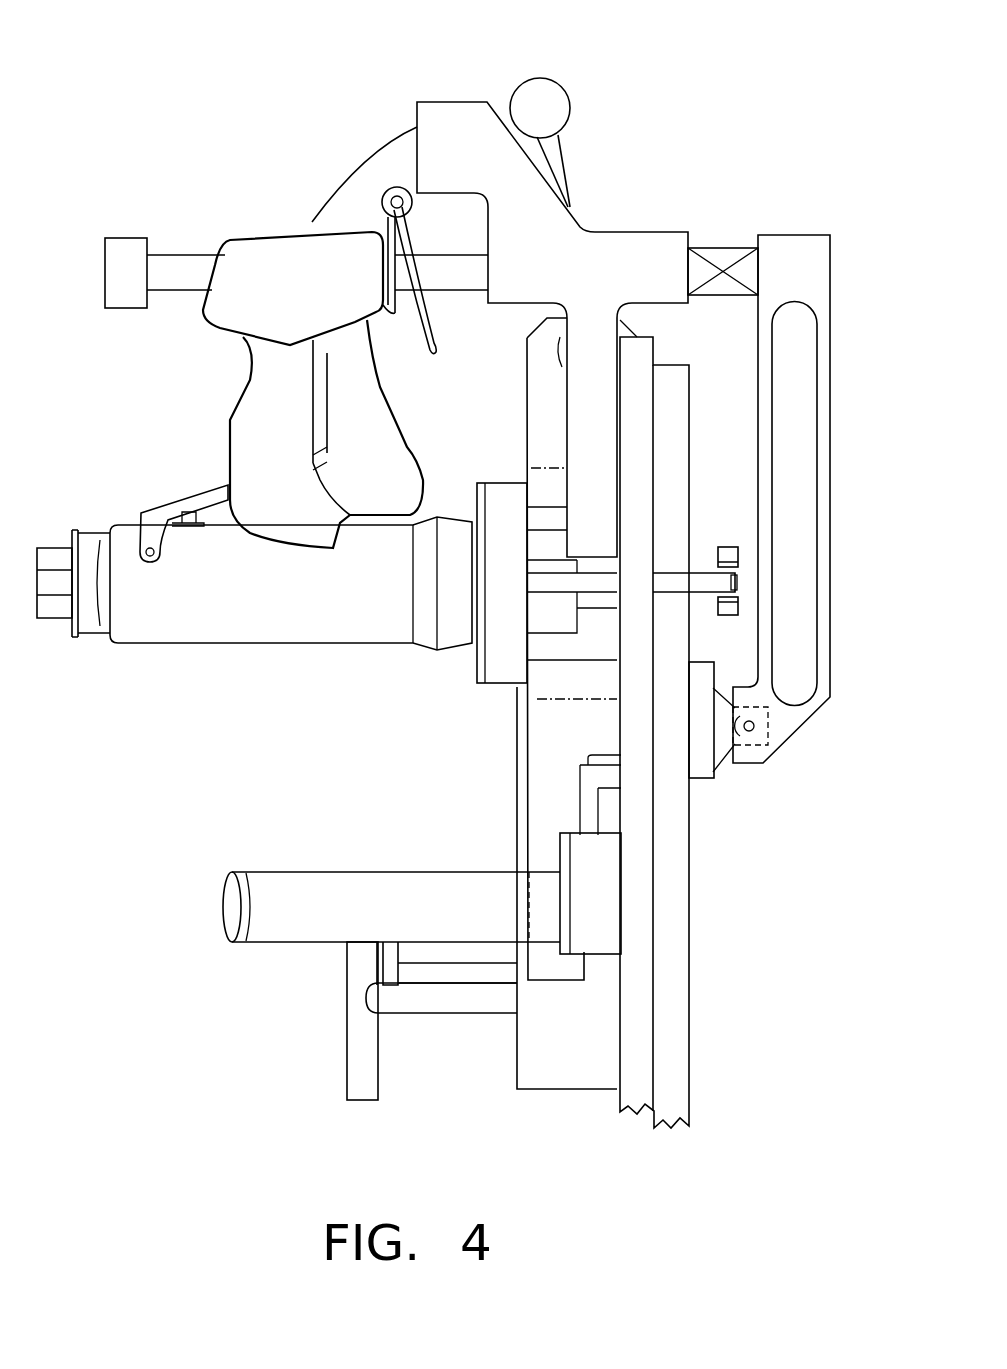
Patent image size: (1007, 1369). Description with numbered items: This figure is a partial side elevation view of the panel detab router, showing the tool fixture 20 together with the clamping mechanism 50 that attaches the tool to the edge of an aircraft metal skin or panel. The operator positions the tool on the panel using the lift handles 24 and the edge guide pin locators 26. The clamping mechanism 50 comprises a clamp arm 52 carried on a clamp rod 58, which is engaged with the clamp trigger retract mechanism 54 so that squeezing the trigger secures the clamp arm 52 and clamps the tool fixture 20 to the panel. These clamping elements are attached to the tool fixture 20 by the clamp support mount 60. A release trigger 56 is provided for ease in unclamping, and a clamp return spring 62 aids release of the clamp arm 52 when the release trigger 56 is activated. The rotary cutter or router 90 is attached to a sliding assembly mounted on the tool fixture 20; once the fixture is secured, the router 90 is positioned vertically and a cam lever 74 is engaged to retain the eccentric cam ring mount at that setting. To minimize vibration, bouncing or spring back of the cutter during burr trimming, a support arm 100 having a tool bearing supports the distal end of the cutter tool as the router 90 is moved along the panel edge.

The tool fixture 20 is at (640, 910).
The lift handles 24 is at (232, 903).
The edge guide pin locators 26 is at (674, 598).
The clamping mechanism 50 is at (398, 88).
The clamp arm 52 is at (820, 495).
The clamp trigger retract mechanism 54 is at (338, 190).
The release trigger 56 is at (422, 372).
The clamp rod 58 is at (193, 262).
The clamp support mount 60 is at (457, 100).
The clamp return spring 62 is at (722, 250).
The cam lever 74 is at (540, 88).
The router 90 is at (203, 625).
The support arm 100 is at (718, 550).